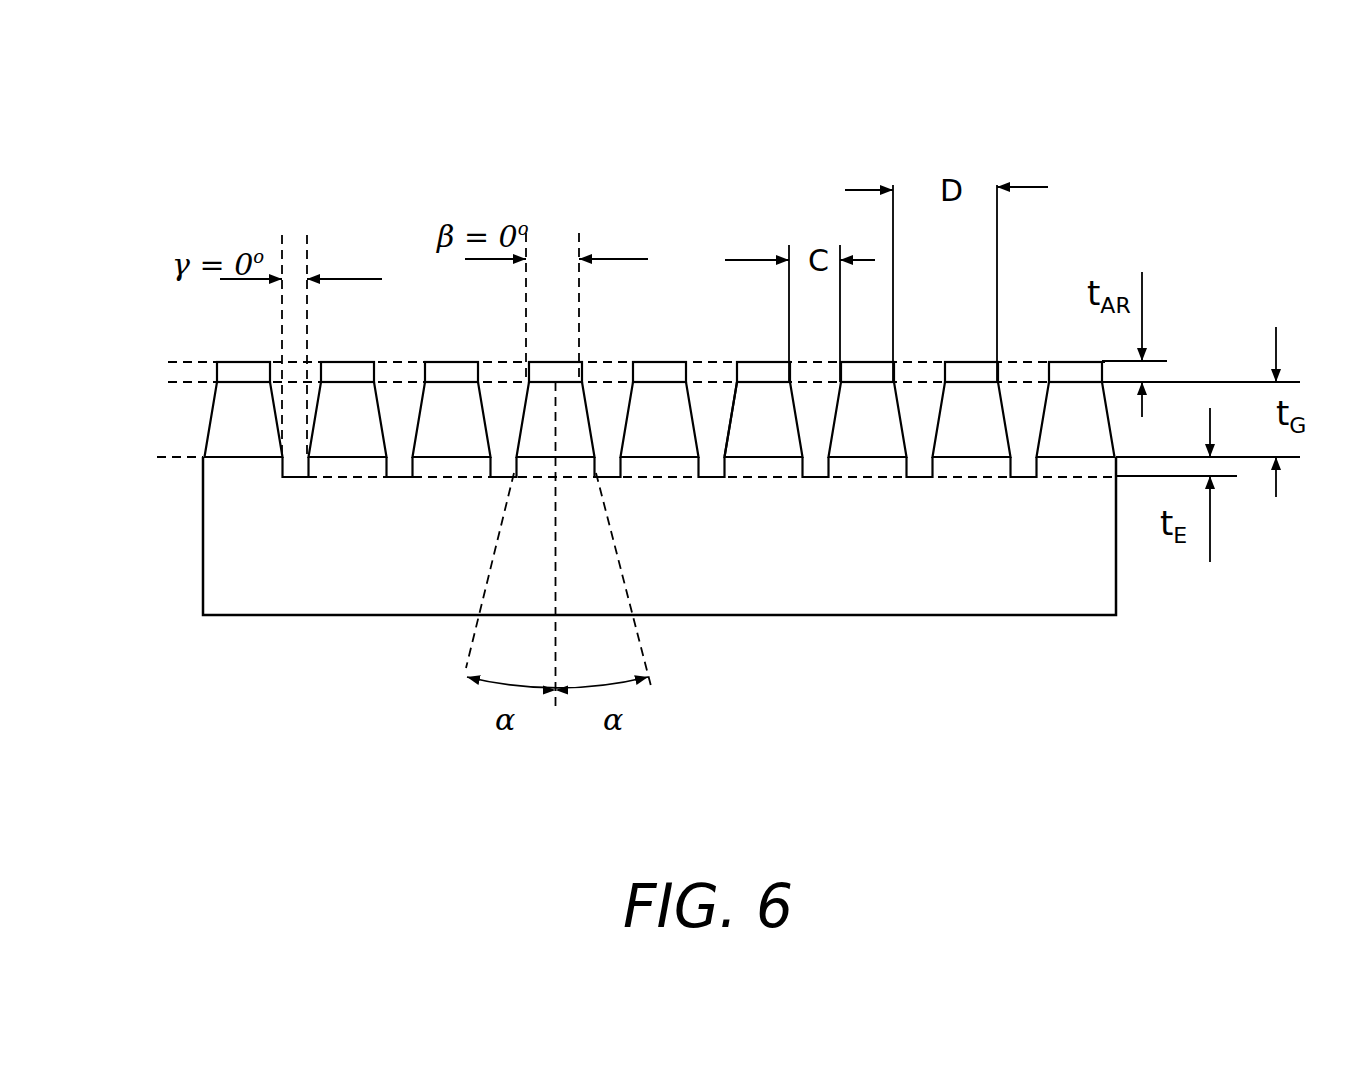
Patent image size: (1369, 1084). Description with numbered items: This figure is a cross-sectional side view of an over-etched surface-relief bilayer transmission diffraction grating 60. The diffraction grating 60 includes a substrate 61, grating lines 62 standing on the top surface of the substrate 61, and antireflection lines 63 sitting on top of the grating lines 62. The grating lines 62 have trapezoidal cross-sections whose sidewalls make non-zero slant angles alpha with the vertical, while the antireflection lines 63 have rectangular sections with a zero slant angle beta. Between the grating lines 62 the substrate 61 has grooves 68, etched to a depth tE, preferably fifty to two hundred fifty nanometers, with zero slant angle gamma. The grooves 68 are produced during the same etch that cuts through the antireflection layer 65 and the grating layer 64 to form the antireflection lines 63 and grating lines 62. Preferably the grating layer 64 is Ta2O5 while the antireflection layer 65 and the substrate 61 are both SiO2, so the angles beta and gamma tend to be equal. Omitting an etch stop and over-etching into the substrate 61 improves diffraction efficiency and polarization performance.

The surface-relief bilayer transmission diffraction grating 60 is at (647, 130).
The substrate 61 is at (373, 577).
The grating lines 62 is at (733, 403).
The antireflection lines 63 is at (658, 362).
The grating layer 64 is at (173, 383).
The antireflection layer 65 is at (173, 363).
The grooves 68 is at (1010, 485).